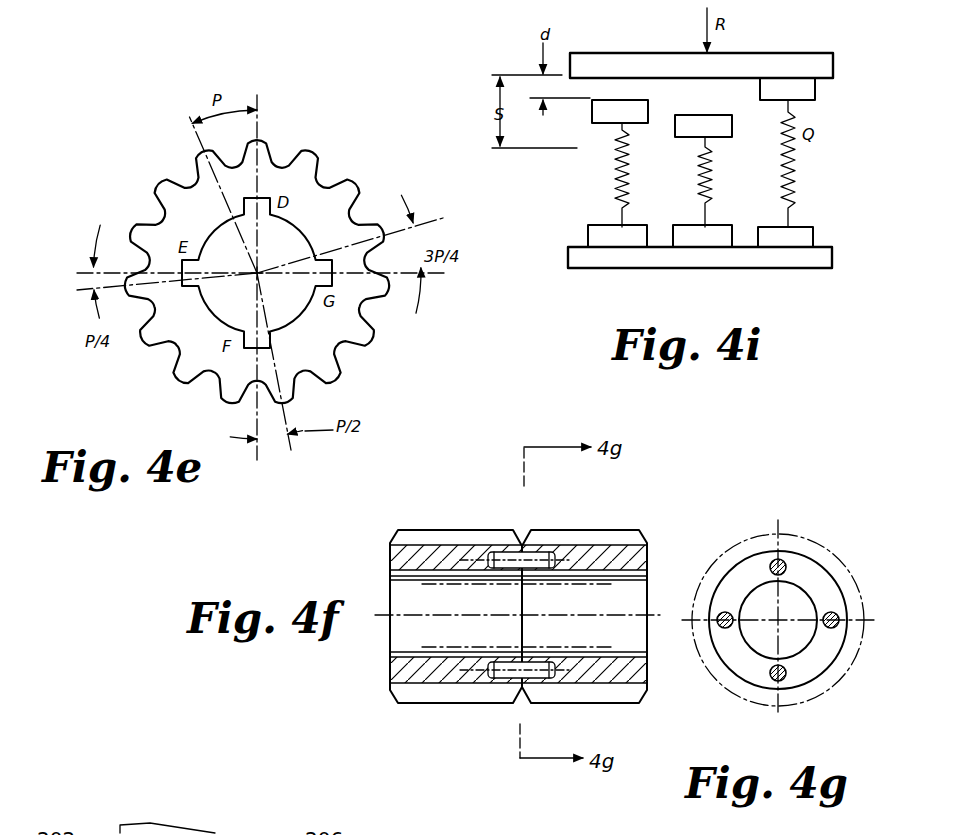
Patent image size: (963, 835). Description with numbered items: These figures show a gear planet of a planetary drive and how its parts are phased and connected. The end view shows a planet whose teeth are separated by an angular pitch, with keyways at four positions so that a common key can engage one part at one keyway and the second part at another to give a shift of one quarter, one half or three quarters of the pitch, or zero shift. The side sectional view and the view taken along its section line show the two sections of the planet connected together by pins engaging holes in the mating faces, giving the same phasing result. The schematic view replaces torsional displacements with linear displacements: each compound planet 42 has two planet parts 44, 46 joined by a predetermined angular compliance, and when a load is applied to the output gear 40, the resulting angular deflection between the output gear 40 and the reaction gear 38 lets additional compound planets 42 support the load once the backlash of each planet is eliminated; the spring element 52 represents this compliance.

In FIG. 4E, the compound planet 42 is at (367, 152).
In FIG. 4I, the compound planet 42 is at (707, 163).
In FIG. 4F, the compound planet 42 is at (517, 575).
In FIG. 4I, the planet part 44 is at (813, 231).
In FIG. 4F, the planet part 44 is at (605, 530).
In FIG. 4G, the planet part 44 is at (817, 553).
In FIG. 4I, the planet part 46 is at (815, 92).
In FIG. 4F, the planet part 46 is at (442, 530).
In FIG. 4I, the output gear 40 is at (833, 63).
In FIG. 4I, the reaction gear 38 is at (832, 258).
In FIG. 4I, the spring 52 is at (794, 157).